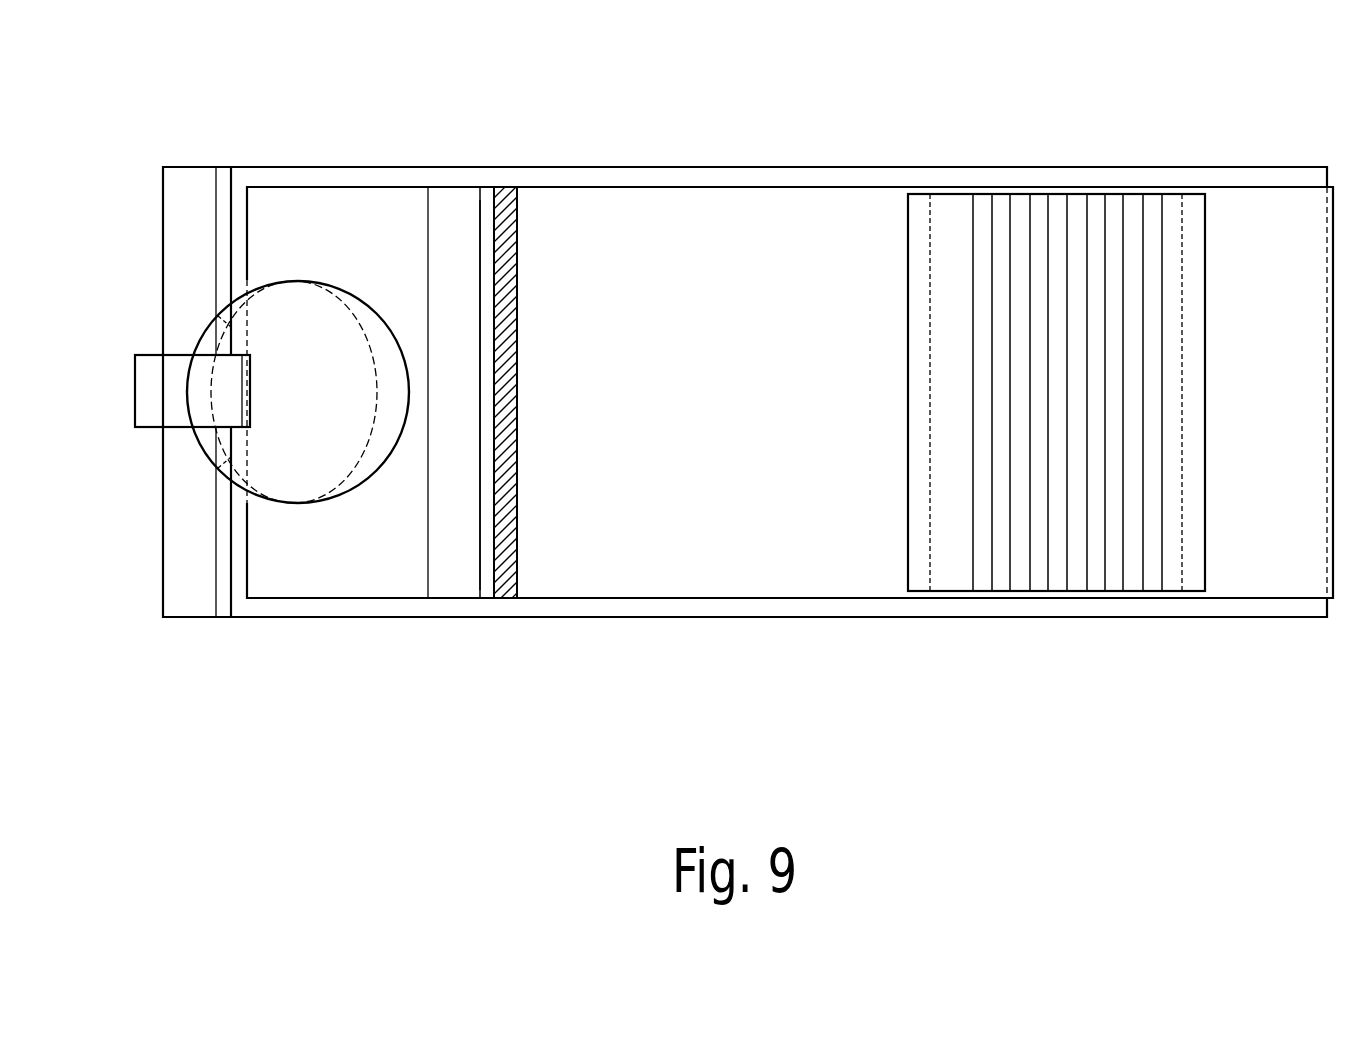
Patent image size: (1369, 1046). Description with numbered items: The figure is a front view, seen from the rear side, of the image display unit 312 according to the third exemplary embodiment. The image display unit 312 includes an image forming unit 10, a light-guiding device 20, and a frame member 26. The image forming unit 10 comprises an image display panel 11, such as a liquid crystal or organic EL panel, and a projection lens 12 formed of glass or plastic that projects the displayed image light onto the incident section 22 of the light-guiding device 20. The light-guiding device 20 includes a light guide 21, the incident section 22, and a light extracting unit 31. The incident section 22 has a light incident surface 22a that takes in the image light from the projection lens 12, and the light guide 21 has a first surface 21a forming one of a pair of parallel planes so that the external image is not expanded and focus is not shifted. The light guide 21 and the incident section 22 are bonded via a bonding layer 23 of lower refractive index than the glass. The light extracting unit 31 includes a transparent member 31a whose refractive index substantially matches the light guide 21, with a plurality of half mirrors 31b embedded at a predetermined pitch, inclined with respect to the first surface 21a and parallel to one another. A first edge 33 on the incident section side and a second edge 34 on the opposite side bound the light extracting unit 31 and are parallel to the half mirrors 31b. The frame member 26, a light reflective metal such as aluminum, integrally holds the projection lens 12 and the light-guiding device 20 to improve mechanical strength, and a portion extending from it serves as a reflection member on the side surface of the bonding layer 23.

The image display unit 312 is at (702, 118).
The image forming unit 10 is at (298, 493).
The image display panel 11 is at (293, 467).
The projection lens 12 is at (333, 413).
The light-guiding device 20 is at (640, 755).
The light guide 21 is at (715, 433).
The first surface 21a is at (626, 207).
The incident section 22 is at (467, 433).
The light incident surface 22a is at (310, 213).
The bonding layer 23 is at (505, 303).
The frame member 26 is at (492, 222).
The light extracting unit 31 is at (987, 431).
The transparent member 31a is at (1003, 215).
The half mirrors 31b is at (1107, 213).
The first edge 33 is at (917, 220).
The second edge 34 is at (1193, 241).